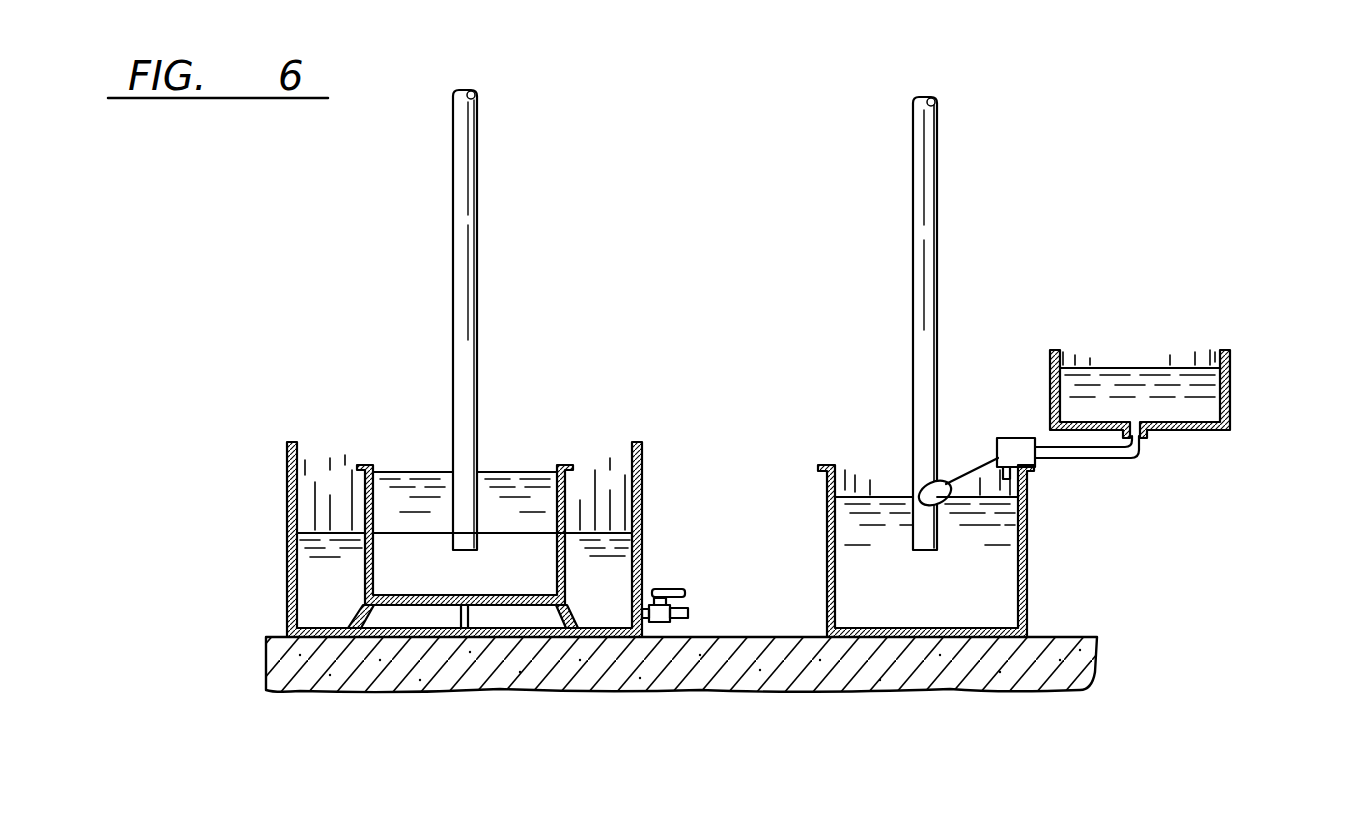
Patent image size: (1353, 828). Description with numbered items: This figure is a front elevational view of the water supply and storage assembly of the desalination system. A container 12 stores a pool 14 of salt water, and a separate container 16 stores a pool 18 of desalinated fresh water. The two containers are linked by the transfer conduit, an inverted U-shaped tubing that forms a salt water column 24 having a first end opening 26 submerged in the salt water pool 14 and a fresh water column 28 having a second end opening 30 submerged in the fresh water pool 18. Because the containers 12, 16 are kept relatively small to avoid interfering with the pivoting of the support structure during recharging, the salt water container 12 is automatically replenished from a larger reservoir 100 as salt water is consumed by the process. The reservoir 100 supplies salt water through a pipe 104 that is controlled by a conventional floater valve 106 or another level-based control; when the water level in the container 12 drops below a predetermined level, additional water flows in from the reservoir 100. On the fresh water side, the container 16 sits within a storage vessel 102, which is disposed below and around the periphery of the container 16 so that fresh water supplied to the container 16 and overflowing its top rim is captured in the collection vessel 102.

The container 12 is at (1030, 585).
The pool of salt water 14 is at (886, 600).
The container 16 is at (568, 497).
The pool of desalinated water 18 is at (530, 565).
The salt water column 24 is at (918, 307).
The first end opening 26 is at (925, 551).
The fresh water column 28 is at (458, 307).
The second end opening 30 is at (463, 552).
The reservoir 100 is at (1230, 398).
The storage vessel 102 is at (645, 520).
The pipe 104 is at (1105, 460).
The floater valve 106 is at (1015, 438).